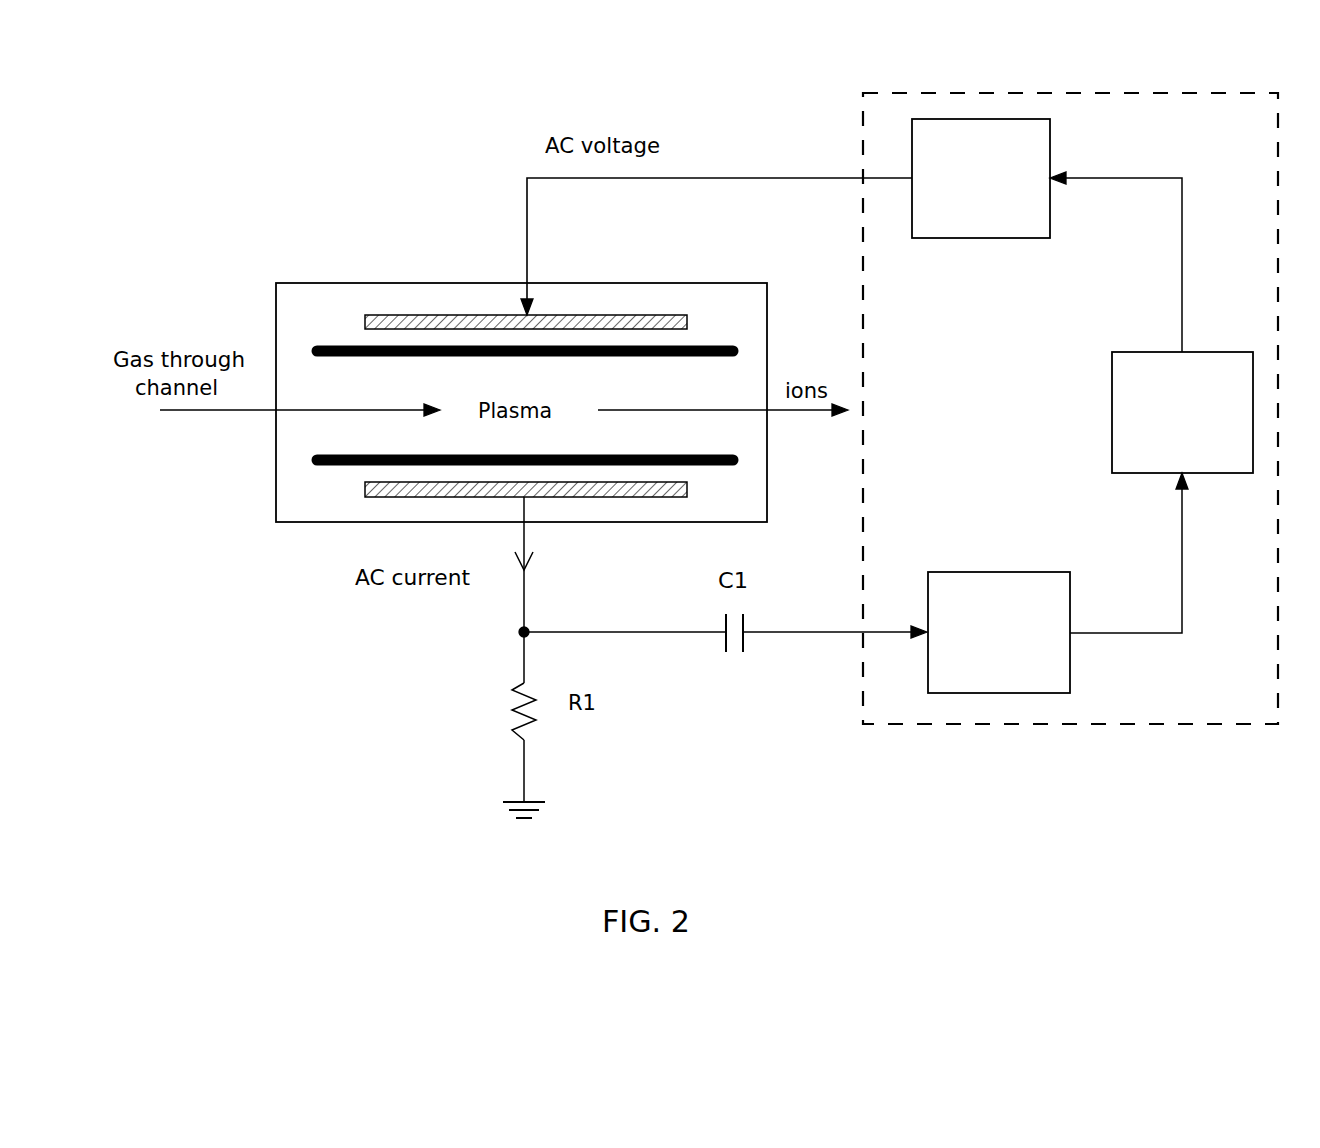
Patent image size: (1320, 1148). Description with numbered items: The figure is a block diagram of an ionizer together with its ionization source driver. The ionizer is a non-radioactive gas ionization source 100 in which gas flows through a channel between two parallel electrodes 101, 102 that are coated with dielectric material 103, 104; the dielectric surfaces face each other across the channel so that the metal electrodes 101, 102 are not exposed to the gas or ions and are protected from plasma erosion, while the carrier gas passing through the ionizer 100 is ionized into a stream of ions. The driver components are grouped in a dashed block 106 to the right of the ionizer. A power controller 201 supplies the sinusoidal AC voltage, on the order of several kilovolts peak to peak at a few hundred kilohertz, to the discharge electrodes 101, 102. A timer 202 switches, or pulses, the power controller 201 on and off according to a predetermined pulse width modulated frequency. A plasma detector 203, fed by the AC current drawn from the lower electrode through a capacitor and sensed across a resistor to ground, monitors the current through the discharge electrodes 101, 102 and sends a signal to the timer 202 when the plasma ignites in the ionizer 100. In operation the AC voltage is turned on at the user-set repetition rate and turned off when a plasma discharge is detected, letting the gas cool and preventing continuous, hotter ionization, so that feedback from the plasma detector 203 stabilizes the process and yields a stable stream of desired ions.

The non-radioactive gas ionization source 100 is at (390, 274).
The electrode 101 is at (607, 314).
The electrode 102 is at (606, 497).
The dielectric material 103 is at (725, 346).
The dielectric material 104 is at (718, 465).
The control unit 106 is at (862, 133).
The power controller 201 is at (978, 240).
The timer 202 is at (1112, 413).
The plasma detector 203 is at (997, 572).